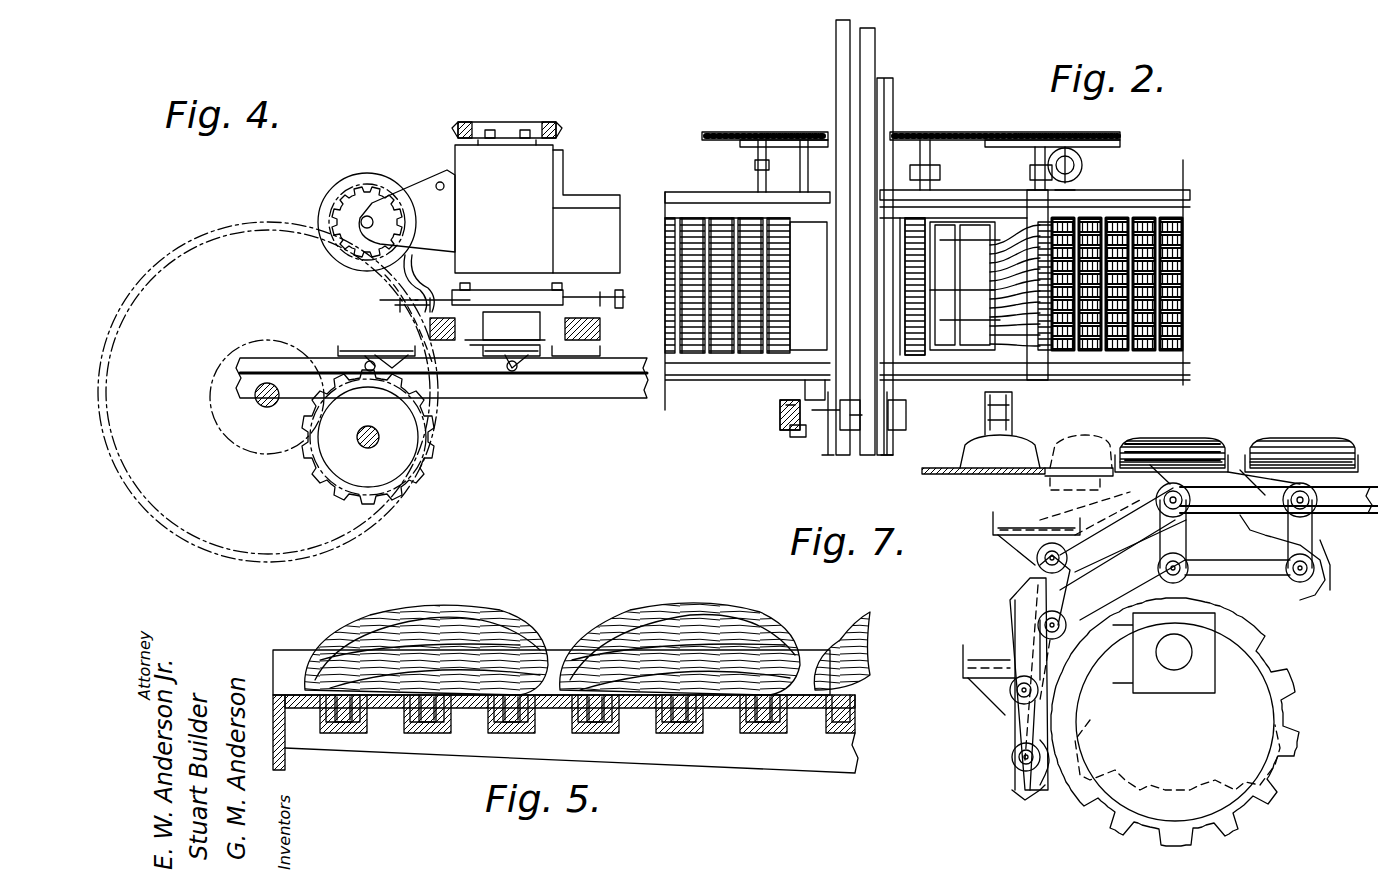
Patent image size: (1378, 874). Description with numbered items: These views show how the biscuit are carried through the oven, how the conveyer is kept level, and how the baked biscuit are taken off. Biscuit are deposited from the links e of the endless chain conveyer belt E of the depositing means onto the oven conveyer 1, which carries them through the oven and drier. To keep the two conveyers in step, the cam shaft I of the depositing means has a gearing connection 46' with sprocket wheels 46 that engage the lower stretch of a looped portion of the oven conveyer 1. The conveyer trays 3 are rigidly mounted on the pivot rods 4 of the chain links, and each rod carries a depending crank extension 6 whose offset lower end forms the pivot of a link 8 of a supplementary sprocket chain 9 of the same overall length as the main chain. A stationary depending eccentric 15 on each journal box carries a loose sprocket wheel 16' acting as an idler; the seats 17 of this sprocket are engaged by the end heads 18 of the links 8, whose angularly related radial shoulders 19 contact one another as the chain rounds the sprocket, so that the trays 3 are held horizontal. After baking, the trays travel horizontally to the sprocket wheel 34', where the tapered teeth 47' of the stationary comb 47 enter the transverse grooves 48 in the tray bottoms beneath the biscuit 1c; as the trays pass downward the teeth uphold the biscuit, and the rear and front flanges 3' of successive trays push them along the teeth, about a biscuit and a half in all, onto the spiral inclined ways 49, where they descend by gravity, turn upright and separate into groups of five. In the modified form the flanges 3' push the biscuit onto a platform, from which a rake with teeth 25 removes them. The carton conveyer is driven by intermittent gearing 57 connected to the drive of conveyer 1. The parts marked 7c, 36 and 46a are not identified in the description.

In FIG. 4, the oven conveyer 1 is at (590, 368).
In FIG. 2, the oven conveyer 1 is at (688, 200).
In FIG. 7, the oven conveyer 1 is at (1345, 506).
In FIG. 2, the biscuit 1c is at (1185, 292).
In FIG. 5, the biscuit 1c is at (540, 630).
In FIG. 4, the conveyer tray 3 is at (469, 373).
In FIG. 2, the conveyer tray 3 is at (746, 321).
In FIG. 7, the conveyer tray 3 is at (1056, 531).
In FIG. 5, the conveyer tray 3 is at (548, 706).
In FIG. 7, the tray flange 3' is at (1301, 432).
In FIG. 5, the tray flange 3' is at (551, 650).
In FIG. 7, the pivot rod 4 is at (1012, 700).
In FIG. 7, the crank extension 6 is at (1045, 600).
In FIG. 7, the tray with loaf 7c is at (1265, 440).
In FIG. 7, the link 8 is at (1038, 728).
In FIG. 7, the supplementary sprocket chain 9 is at (1110, 596).
In FIG. 7, the eccentric 15 is at (1115, 780).
In FIG. 7, the sprocket wheel 16' is at (1186, 722).
In FIG. 7, the seat 17 is at (1110, 845).
In FIG. 7, the end head 18 is at (1040, 782).
In FIG. 7, the radial shoulder 19 is at (1030, 770).
In FIG. 7, the rake tooth 25 is at (975, 452).
In FIG. 7, the sprocket wheel 34' is at (1299, 566).
In FIG. 7, the plate 36 is at (945, 474).
In FIG. 4, the sprocket wheel 46 is at (386, 437).
In FIG. 4, the gearing connection 46' is at (267, 365).
In FIG. 2, the rack 46a is at (757, 132).
In FIG. 2, the comb 47 is at (1059, 299).
In FIG. 7, the comb 47 is at (1037, 489).
In FIG. 7, the comb tooth 47' is at (1156, 436).
In FIG. 5, the comb tooth 47' is at (878, 711).
In FIG. 5, the transverse groove 48 is at (762, 735).
In FIG. 2, the spiral inclined way 49 is at (1000, 370).
In FIG. 2, the intermittent gearing 57 is at (1040, 130).
In FIG. 4, the endless chain conveyer belt E is at (512, 320).
In FIG. 4, the cam shaft I is at (365, 220).
In FIG. 2, the cam shaft I is at (800, 172).
In FIG. 4, the link e is at (530, 330).